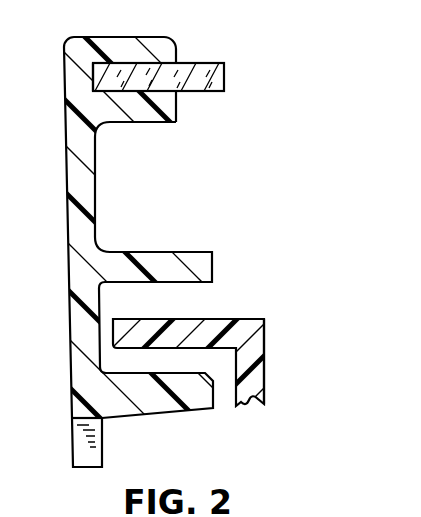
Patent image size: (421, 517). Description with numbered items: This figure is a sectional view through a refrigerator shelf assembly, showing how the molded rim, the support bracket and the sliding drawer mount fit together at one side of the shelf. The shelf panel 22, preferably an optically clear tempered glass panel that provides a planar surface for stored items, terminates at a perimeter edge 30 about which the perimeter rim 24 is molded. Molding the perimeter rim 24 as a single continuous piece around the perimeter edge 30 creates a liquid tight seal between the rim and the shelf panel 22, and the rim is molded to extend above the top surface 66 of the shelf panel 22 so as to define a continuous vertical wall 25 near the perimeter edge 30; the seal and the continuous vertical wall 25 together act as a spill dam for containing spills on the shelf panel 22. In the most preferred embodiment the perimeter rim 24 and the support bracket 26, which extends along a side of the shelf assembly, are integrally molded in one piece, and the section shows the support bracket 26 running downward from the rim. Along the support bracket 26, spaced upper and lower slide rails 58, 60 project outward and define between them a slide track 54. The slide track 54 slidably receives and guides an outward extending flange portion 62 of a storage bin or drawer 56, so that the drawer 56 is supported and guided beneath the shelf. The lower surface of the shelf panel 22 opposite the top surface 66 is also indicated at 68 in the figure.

The shelf panel 22 is at (224, 72).
The perimeter rim 24 is at (135, 46).
The continuous vertical wall 25 is at (171, 59).
The support bracket 26 is at (76, 186).
The perimeter edge 30 is at (92, 72).
The slide track 54 is at (210, 306).
The storage bin or drawer 56 is at (268, 359).
The upper slide rail 58 is at (162, 260).
The lower slide rail 60 is at (163, 401).
The flange portion 62 is at (250, 318).
The top surface 66 is at (209, 60).
The lower surface of plate 68 is at (188, 93).